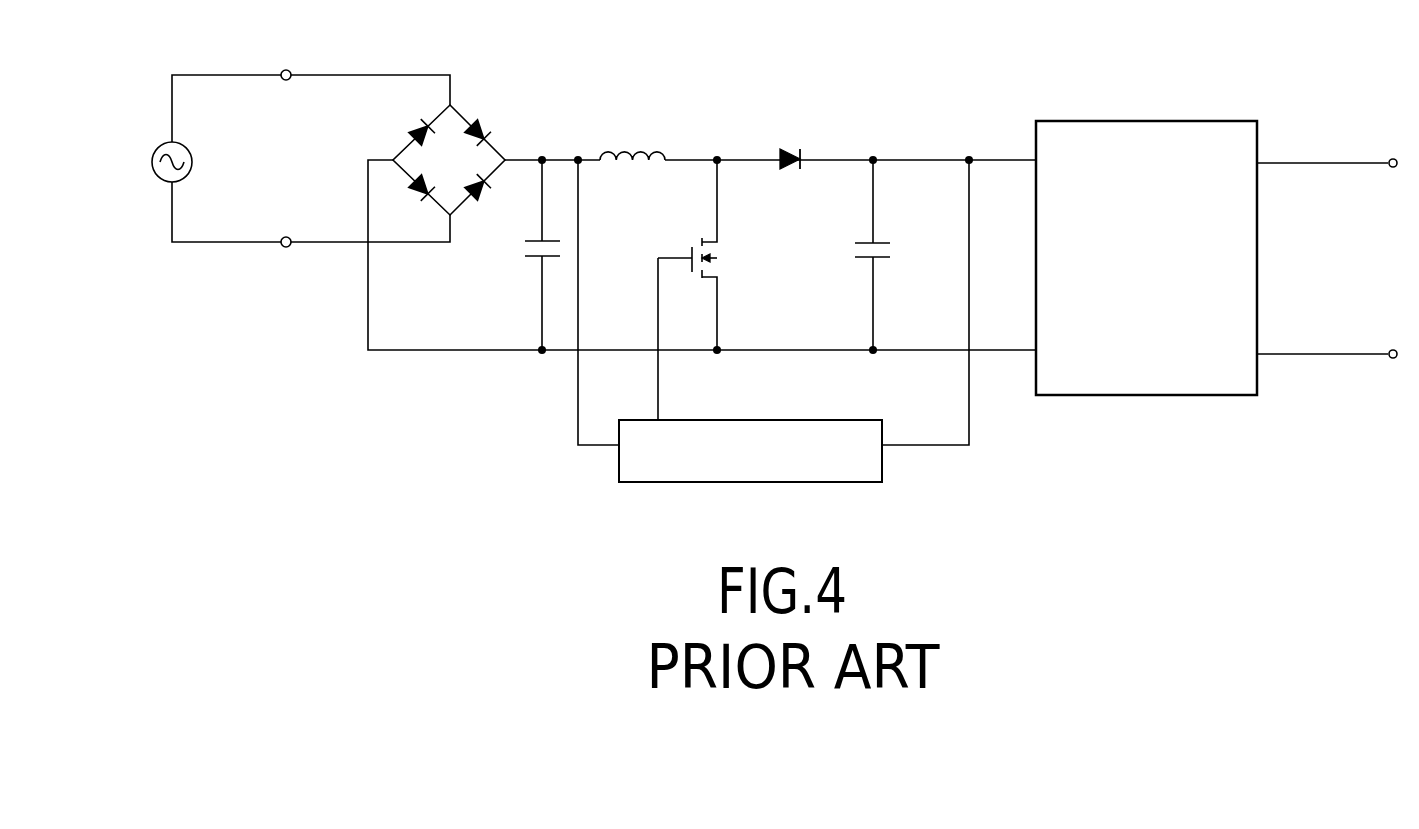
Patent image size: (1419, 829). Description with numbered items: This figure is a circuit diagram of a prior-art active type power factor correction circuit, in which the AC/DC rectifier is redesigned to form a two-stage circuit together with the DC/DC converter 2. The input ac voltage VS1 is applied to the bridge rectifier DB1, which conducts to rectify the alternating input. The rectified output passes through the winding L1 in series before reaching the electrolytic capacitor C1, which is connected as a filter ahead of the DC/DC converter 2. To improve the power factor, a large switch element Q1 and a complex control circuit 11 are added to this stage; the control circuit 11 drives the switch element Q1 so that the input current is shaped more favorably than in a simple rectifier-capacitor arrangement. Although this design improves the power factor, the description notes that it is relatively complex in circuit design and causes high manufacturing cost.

The DC/DC converter 2 is at (1200, 136).
The control circuit 11 is at (877, 462).
The input ac voltage VS1 is at (140, 159).
The bridge rectifier DB1 is at (451, 124).
The winding L1 is at (632, 127).
The switch element Q1 is at (713, 255).
The electrolytic capacitor C1 is at (894, 255).